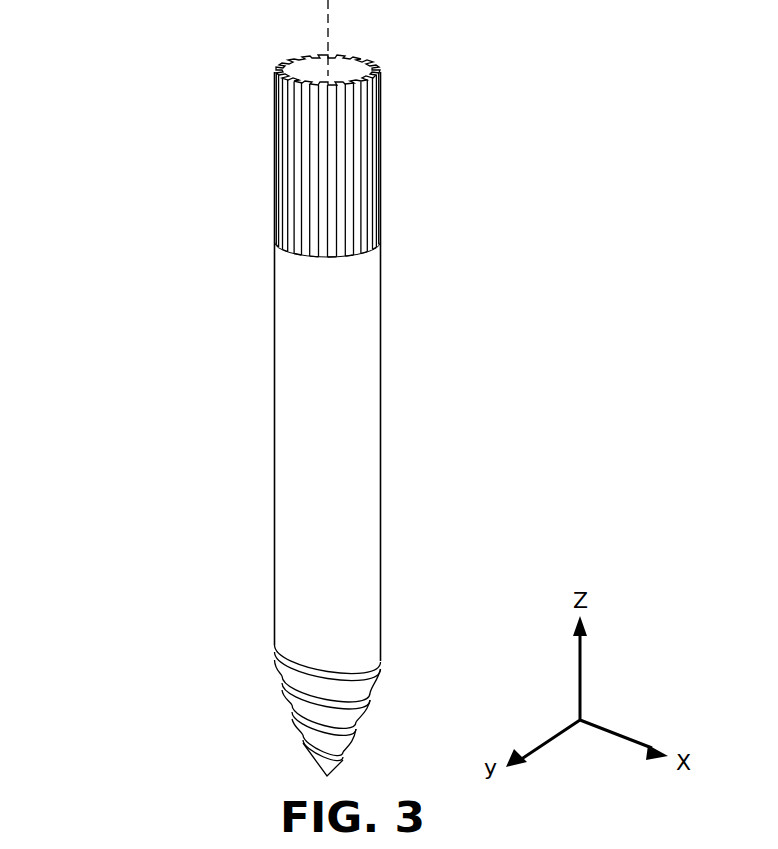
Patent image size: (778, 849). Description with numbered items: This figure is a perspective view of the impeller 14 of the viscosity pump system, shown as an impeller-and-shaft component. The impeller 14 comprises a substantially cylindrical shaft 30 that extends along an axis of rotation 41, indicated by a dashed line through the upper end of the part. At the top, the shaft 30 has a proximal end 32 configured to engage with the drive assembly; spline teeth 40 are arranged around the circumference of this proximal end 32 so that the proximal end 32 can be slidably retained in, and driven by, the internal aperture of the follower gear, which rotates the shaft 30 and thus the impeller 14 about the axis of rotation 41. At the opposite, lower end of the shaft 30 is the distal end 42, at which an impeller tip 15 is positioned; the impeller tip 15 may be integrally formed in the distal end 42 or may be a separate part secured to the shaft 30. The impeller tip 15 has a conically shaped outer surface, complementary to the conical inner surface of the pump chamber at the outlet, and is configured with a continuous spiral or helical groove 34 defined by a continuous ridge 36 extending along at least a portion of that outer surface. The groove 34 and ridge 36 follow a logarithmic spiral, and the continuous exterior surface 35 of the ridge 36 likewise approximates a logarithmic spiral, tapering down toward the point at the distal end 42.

The impeller 14 is at (122, 724).
The impeller tip 15 is at (264, 742).
The shaft 30 is at (234, 387).
The proximal end 32 is at (345, 72).
The groove 34 is at (347, 693).
The exterior surface 35 is at (275, 652).
The ridge 36 is at (362, 707).
The spline teeth 40 is at (274, 157).
The axis of rotation 41 is at (330, 22).
The distal end 42 is at (336, 776).